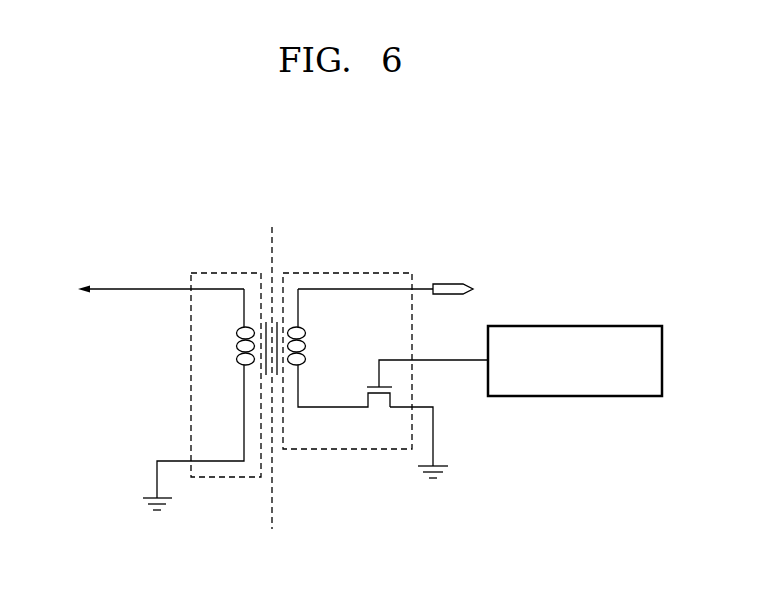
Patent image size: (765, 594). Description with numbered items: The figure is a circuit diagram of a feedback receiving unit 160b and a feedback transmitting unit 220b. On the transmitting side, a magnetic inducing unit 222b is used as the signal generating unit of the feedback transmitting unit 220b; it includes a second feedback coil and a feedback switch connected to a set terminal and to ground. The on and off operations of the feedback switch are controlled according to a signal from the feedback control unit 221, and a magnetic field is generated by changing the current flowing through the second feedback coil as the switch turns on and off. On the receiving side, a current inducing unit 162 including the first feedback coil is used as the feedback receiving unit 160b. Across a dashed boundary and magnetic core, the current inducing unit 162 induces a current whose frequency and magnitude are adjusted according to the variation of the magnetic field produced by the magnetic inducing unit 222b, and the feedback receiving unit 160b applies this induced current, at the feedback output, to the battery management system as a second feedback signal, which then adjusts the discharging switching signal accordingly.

The feedback receiving unit 160b is at (167, 248).
The current inducing unit 162 is at (226, 270).
The feedback transmitting unit 220b is at (417, 252).
The magnetic inducing unit 222b is at (359, 270).
The feedback control unit 221 is at (607, 397).